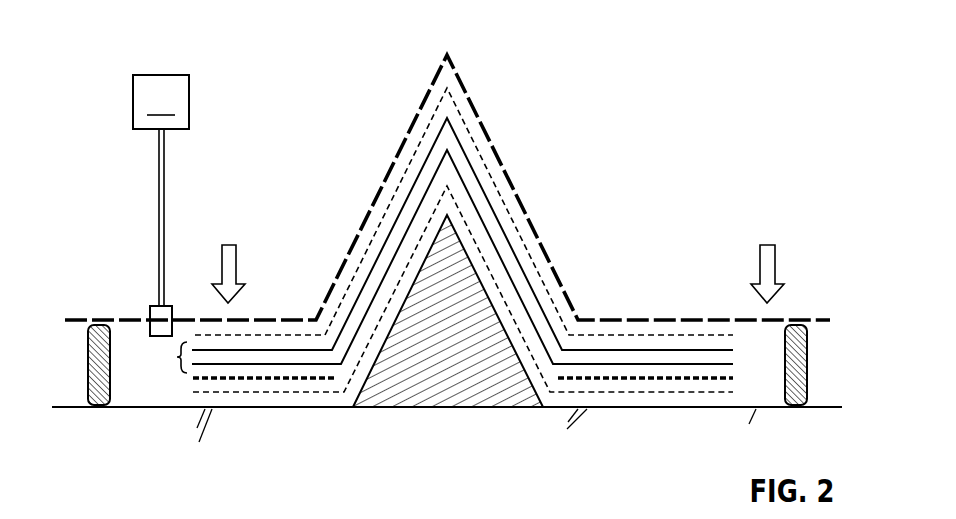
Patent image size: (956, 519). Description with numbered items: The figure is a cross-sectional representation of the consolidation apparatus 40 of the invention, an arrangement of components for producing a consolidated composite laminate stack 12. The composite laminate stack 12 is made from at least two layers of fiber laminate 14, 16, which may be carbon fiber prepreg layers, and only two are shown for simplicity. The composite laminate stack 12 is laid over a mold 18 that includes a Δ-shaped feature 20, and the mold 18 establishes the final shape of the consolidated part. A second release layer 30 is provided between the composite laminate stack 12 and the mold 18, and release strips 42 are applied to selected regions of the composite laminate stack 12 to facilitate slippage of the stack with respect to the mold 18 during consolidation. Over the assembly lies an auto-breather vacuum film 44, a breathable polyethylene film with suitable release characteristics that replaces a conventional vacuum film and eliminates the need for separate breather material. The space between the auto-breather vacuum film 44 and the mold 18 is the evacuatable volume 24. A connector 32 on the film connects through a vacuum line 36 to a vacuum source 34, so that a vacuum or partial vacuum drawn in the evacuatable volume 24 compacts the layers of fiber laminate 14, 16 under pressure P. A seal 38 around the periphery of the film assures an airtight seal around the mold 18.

The composite laminate stack 12 is at (177, 357).
The fiber laminate layer 14 is at (670, 363).
The fiber laminate layer 16 is at (528, 277).
The mold 18 is at (555, 408).
The Δ-shaped feature 20 is at (456, 367).
The evacuatable volume 24 is at (750, 392).
The second release layer 30 is at (303, 392).
The connector 32 is at (150, 320).
The vacuum source 34 is at (161, 102).
The vacuum line 36 is at (163, 205).
The seal 38 is at (98, 330).
The consolidation apparatus 40 is at (661, 131).
The release strips 42 is at (217, 378).
The auto-breather vacuum film 44 is at (513, 182).